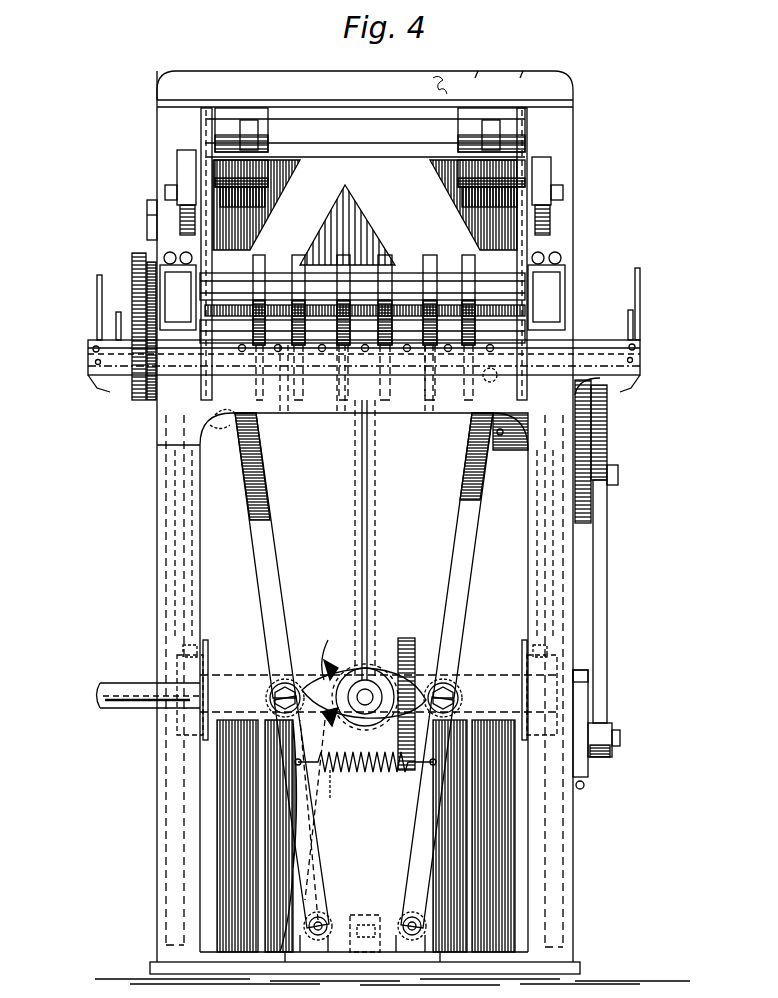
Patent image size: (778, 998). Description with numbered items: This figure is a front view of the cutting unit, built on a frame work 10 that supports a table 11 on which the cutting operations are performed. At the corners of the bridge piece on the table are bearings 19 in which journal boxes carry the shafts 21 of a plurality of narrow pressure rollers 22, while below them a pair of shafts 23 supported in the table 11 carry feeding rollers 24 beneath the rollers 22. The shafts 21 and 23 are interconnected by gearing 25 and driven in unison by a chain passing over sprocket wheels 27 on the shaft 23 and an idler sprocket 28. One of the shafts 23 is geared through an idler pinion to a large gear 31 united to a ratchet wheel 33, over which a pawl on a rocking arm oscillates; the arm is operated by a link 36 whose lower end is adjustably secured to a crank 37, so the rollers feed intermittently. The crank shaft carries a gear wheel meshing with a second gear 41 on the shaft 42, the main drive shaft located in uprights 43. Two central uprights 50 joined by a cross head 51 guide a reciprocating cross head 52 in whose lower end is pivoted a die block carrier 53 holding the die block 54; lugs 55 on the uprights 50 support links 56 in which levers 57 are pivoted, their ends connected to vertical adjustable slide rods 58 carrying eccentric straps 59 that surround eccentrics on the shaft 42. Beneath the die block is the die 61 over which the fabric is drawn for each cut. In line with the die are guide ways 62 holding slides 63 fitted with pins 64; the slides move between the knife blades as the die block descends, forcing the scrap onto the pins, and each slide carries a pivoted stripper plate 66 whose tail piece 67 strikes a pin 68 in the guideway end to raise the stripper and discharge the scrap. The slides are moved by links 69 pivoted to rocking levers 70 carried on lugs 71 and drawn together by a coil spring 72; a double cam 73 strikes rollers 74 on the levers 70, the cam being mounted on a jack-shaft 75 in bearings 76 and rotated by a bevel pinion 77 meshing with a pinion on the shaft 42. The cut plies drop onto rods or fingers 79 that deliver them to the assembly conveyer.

The frame work 10 is at (165, 505).
The table 11 is at (503, 350).
The bearings 19 is at (586, 258).
The shafts 21 is at (230, 293).
The pressure rollers 22 is at (345, 258).
The shafts 23 is at (285, 396).
The feeding rollers 24 is at (337, 415).
The gearing 25 is at (132, 272).
The sprocket wheels 27 is at (150, 405).
The idler sprocket 28 is at (152, 207).
The large gear 31 is at (590, 516).
The ratchet wheel 33 is at (600, 437).
The link 36 is at (604, 577).
The crank 37 is at (590, 762).
The second gear 41 is at (413, 636).
The shaft 42 is at (116, 683).
The uprights 43 is at (505, 872).
The central uprights 50 is at (573, 133).
The cross head 51 is at (483, 68).
The reciprocating cross head 52 is at (388, 135).
The die block carrier 53 is at (275, 300).
The die block 54 is at (400, 310).
The lugs 55 is at (180, 165).
The links 56 is at (204, 130).
The levers 57 is at (242, 135).
The slide rods 58 is at (195, 541).
The eccentric straps 59 is at (206, 640).
The die 61 is at (455, 352).
The guide ways 62 is at (104, 378).
The slides 63 is at (115, 326).
The pins 64 is at (120, 340).
The stripper plate 66 is at (96, 290).
The tail piece 67 is at (92, 350).
The pin 68 is at (97, 364).
The links 69 is at (512, 450).
The rocking levers 70 is at (268, 527).
The lugs 71 is at (328, 915).
The coil spring 72 is at (345, 778).
The double cam 73 is at (336, 665).
The rollers 74 is at (272, 693).
The jack-shaft 75 is at (360, 680).
The bearings 76 is at (325, 820).
The bevel pinion 77 is at (380, 662).
The rods or fingers 79 is at (448, 352).